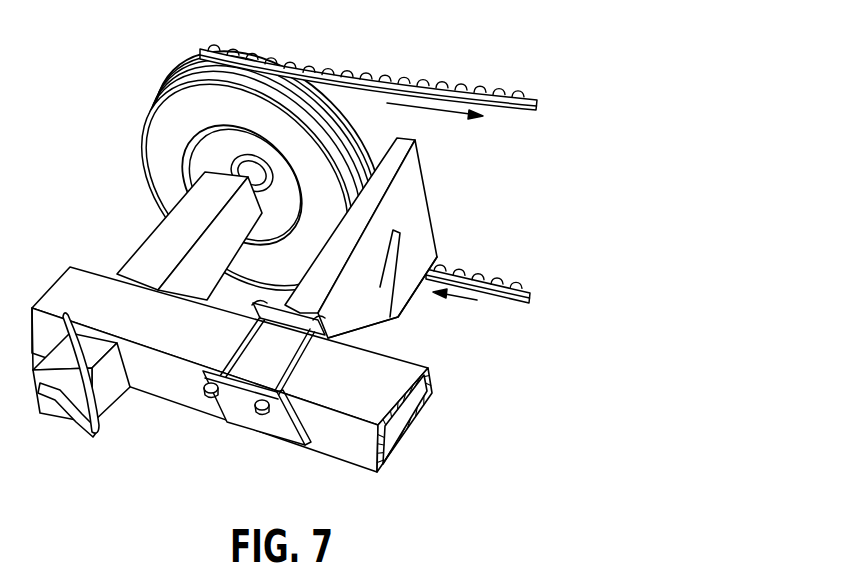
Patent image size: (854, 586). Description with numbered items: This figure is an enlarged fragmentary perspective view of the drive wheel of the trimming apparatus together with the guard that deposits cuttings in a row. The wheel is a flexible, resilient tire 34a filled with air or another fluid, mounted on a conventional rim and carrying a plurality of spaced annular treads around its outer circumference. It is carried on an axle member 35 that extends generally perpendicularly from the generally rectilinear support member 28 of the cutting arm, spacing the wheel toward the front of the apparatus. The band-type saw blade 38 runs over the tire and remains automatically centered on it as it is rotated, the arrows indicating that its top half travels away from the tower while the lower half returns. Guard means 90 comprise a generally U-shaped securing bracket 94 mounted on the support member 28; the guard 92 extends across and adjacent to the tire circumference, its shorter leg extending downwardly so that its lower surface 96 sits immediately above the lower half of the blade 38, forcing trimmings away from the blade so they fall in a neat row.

The tire 34a is at (257, 52).
The band-type saw blade 38 is at (420, 80).
The support member 28 is at (347, 450).
The axle member 35 is at (160, 238).
The guard means 90 is at (411, 240).
The guard 92 is at (410, 211).
The lower surface 96 is at (415, 305).
The securing bracket 94 is at (252, 425).